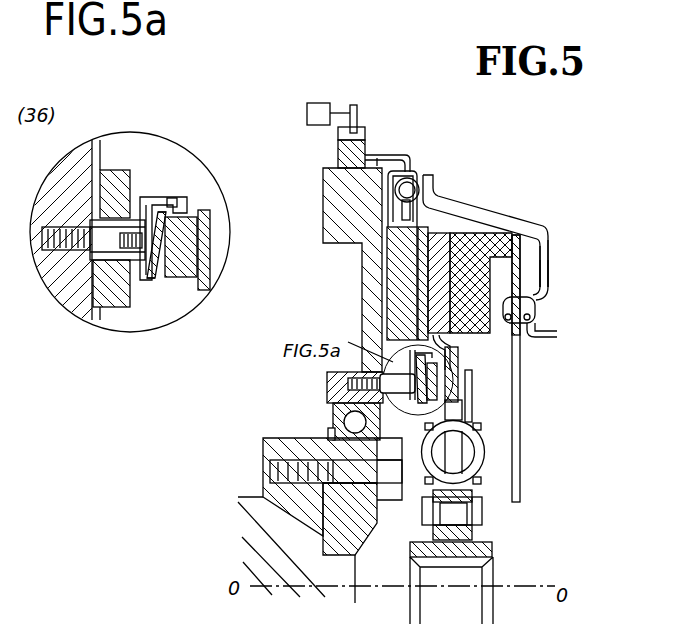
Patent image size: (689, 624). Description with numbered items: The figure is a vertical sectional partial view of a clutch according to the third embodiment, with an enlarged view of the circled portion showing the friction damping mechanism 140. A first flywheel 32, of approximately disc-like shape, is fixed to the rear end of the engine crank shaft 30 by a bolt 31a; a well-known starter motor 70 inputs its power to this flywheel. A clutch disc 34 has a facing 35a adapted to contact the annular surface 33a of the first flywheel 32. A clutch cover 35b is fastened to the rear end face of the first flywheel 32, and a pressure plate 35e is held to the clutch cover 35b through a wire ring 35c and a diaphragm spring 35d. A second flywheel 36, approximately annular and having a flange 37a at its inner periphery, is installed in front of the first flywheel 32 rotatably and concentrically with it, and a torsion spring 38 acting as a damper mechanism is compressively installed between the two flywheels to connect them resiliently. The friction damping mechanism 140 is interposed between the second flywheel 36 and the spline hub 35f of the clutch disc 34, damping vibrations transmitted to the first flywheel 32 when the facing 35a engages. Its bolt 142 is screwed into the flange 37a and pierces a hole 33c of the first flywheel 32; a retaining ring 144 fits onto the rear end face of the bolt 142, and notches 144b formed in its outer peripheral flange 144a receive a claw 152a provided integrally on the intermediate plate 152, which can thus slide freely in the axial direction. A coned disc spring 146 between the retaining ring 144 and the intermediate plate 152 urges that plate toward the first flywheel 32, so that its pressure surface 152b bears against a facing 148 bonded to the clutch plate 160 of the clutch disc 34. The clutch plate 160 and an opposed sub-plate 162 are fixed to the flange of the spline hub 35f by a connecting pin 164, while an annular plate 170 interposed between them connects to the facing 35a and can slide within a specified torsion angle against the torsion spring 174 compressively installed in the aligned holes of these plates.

In FIG. 5, the engine crank shaft 30 is at (287, 507).
In FIG. 5, the bolt 31a is at (270, 466).
In FIG. 5A, the first flywheel 32 is at (122, 170).
In FIG. 5, the first flywheel 32 is at (430, 232).
In FIG. 5, the annular surface 33a is at (472, 262).
In FIG. 5A, the hole 33c is at (90, 140).
In FIG. 5, the clutch disc 34 is at (495, 376).
In FIG. 5, the facing 35a is at (540, 272).
In FIG. 5, the clutch cover 35b is at (550, 238).
In FIG. 5, the wire ring 35c is at (537, 307).
In FIG. 5, the diaphragm spring 35d is at (520, 424).
In FIG. 5, the pressure plate 35e is at (505, 212).
In FIG. 5, the spline hub 35f is at (490, 553).
In FIG. 5A, the second flywheel 36 is at (60, 232).
In FIG. 5, the second flywheel 36 is at (342, 205).
In FIG. 5A, the flange 37a is at (78, 227).
In FIG. 5, the flange 37a is at (336, 390).
In FIG. 5, the torsion spring 38 is at (408, 172).
In FIG. 5, the starter motor 70 is at (323, 103).
In FIG. 5, the friction damping mechanism 140 is at (460, 345).
In FIG. 5A, the bolt 142 is at (98, 312).
In FIG. 5A, the retaining ring 144 is at (150, 197).
In FIG. 5A, the outer peripheral flange 144a is at (165, 200).
In FIG. 5A, the notch 144b is at (188, 202).
In FIG. 5A, the coned disc spring 146 is at (135, 312).
In FIG. 5A, the facing 148 is at (185, 236).
In FIG. 5A, the intermediate plate 152 is at (162, 305).
In FIG. 5A, the claw 152a is at (173, 200).
In FIG. 5A, the pressure surface 152b is at (205, 296).
In FIG. 5A, the clutch plate 160 is at (203, 263).
In FIG. 5, the sub-plate 162 is at (477, 487).
In FIG. 5, the connecting pin 164 is at (482, 512).
In FIG. 5, the annular plate 170 is at (463, 390).
In FIG. 5, the torsion spring 174 is at (482, 455).